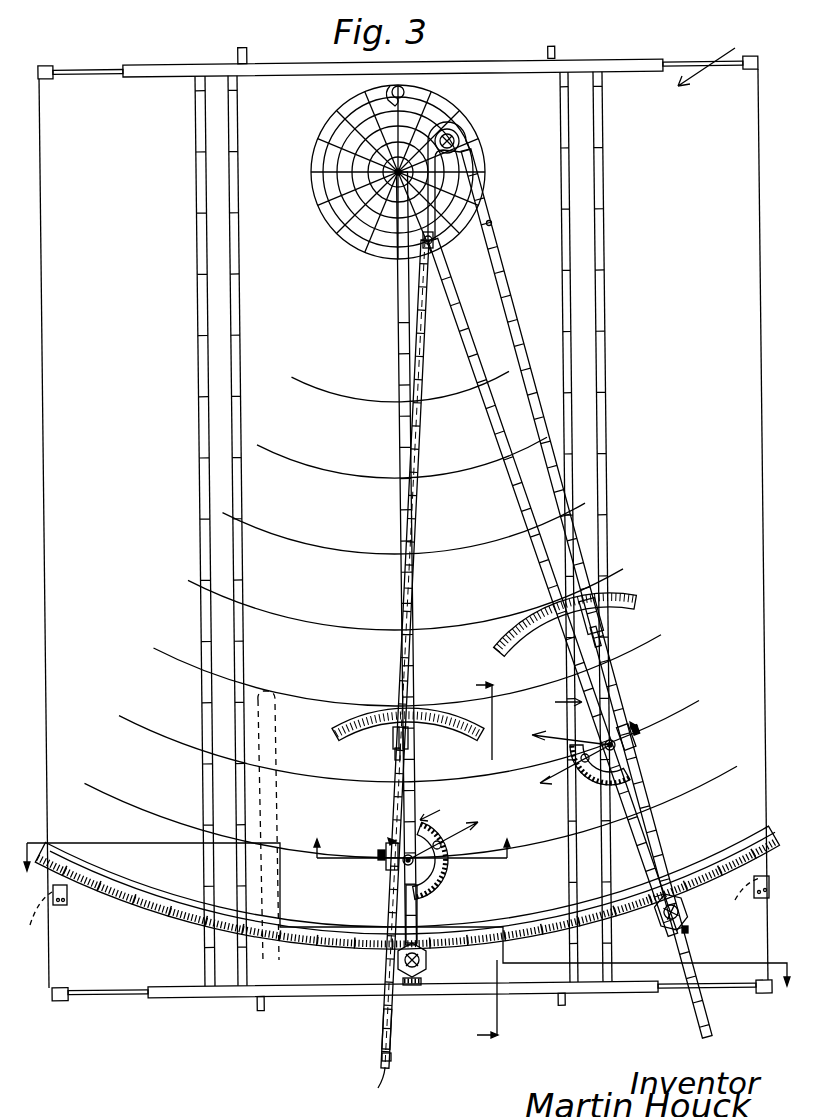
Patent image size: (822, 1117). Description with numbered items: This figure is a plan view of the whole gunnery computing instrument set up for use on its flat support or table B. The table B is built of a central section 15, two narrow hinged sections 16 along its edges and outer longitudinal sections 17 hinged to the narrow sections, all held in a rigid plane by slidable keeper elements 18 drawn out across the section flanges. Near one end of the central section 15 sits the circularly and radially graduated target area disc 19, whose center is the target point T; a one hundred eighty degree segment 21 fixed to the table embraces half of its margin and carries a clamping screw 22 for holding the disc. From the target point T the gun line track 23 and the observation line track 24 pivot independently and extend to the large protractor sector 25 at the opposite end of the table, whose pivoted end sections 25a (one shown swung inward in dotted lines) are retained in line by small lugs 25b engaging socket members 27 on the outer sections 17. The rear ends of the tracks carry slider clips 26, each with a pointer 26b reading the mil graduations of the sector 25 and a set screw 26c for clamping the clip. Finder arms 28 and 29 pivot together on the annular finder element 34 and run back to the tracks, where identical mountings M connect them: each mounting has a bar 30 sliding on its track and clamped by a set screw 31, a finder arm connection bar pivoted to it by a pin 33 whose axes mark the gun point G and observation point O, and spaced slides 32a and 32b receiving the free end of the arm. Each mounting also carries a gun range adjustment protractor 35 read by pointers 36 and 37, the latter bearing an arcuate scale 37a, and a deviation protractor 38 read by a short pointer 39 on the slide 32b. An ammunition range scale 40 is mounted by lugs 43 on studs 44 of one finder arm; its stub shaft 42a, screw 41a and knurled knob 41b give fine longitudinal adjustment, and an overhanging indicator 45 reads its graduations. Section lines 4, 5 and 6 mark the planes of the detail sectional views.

The central section 15 is at (500, 82).
The narrow sections 16 is at (215, 268).
The longitudinal sections 17 is at (52, 262).
The slidable keeper elements 18 is at (200, 70).
The target area disc 19 is at (380, 172).
The 180 degree segment 21 is at (332, 128).
The clamping screw 22 is at (404, 90).
The gun line track 23 is at (455, 557).
The observation line track 24 is at (460, 323).
The large protractor sector 25 is at (516, 936).
The end sector sections 25a is at (270, 790).
The small lugs 25b is at (748, 905).
The slider clips 26 is at (428, 968).
The indicating pointers 26b is at (418, 948).
The set screw 26c is at (410, 986).
The socket members 27 is at (60, 905).
The finder arm 28 is at (476, 557).
The finder arm 29 is at (522, 345).
The mounting bar 30 is at (478, 632).
The set screw 31 is at (378, 858).
The slide 32a is at (392, 838).
The slide 32b is at (395, 742).
The pivot pin 33 is at (395, 870).
The annular finder element 34 is at (458, 136).
The gun range adjustment protractor 35 is at (425, 890).
The indicating pointer 36 is at (476, 822).
The second indicating pointer 37 is at (545, 727).
The arcuate scale 37a is at (450, 862).
The deviation protractor 38 is at (336, 732).
The short pointer 39 is at (412, 722).
The ammunition range scale 40 is at (383, 653).
The screw 41a is at (354, 1029).
The knurled knob 41b is at (378, 1088).
The stub shaft 42a is at (433, 250).
The upstanding lugs 43 is at (433, 240).
The upstanding studs 44 is at (492, 224).
The overhanging indicator 45 is at (388, 841).
The table B is at (706, 58).
The target point T is at (391, 172).
The mountings M is at (501, 756).
The gun sight position G is at (417, 865).
The observation point O is at (626, 758).
The section line 4- 4 is at (476, 861).
The section line 5- 5 is at (411, 841).
The section line 6- 6 is at (410, 921).